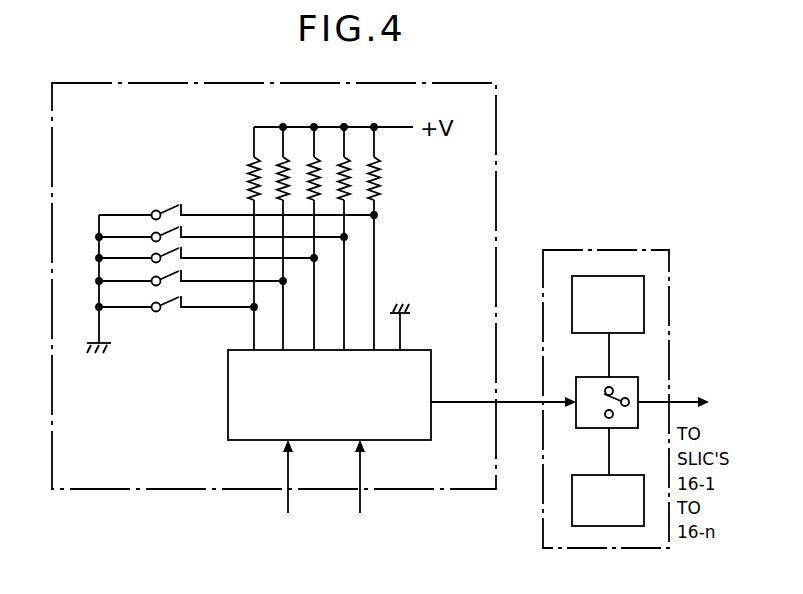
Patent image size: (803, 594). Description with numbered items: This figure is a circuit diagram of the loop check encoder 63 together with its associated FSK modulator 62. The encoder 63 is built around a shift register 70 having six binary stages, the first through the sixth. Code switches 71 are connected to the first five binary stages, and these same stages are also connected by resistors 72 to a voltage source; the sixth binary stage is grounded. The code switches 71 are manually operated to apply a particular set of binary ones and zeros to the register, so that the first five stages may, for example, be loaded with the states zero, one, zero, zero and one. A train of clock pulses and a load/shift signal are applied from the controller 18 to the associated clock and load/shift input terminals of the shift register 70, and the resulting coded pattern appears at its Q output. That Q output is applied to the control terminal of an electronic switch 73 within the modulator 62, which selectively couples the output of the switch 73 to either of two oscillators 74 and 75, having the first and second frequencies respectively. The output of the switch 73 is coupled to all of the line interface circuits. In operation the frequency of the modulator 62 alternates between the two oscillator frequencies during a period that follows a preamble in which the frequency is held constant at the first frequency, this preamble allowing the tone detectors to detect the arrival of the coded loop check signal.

The encoder 63 is at (496, 157).
The FSK modulator 62 is at (558, 250).
The shift register 70 is at (433, 374).
The code switches 71 is at (175, 197).
The resistors 72 is at (386, 176).
The electronic switch 73 is at (576, 388).
The oscillator 74 is at (572, 302).
The oscillator 75 is at (572, 486).
The controller 18 is at (350, 493).